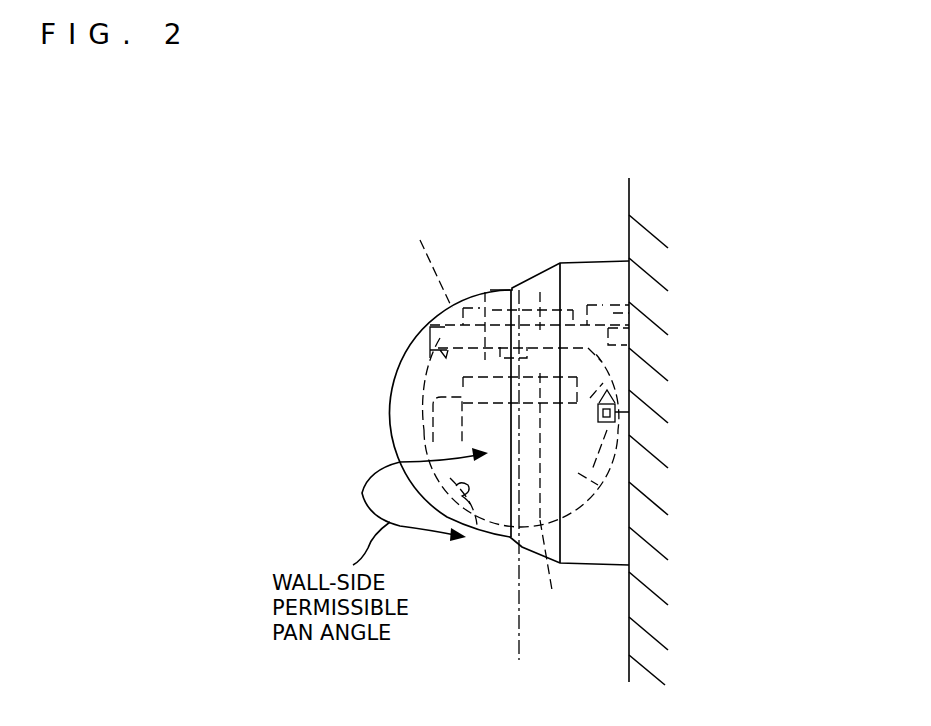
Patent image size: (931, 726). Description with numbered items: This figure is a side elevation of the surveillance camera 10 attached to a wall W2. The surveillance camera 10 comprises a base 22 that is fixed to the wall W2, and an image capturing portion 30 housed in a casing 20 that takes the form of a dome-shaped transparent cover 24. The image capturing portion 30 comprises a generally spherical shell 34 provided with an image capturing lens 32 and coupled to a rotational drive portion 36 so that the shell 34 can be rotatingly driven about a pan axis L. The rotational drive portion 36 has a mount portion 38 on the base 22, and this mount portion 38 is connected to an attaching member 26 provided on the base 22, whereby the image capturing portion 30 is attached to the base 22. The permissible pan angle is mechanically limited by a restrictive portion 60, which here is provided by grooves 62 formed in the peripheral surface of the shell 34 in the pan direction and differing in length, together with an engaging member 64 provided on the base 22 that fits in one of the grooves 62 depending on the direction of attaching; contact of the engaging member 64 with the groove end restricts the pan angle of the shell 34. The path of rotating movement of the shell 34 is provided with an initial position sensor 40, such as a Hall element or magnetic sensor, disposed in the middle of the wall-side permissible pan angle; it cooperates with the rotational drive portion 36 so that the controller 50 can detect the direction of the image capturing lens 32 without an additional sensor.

The surveillance camera 10 is at (374, 251).
The casing 20 is at (573, 140).
The base 22 is at (593, 272).
The dome-shaped transparent cover 24 is at (489, 290).
The attaching member 26 is at (643, 322).
The image capturing portion 30 is at (405, 430).
The image capturing lens 32 is at (477, 525).
The shell 34 is at (603, 490).
The rotational drive portion 36 is at (426, 258).
The mount portion 38 is at (425, 343).
The initial position sensor 40 is at (408, 368).
The controller 50 is at (558, 572).
The restrictive portion 60 is at (748, 383).
The grooves 62 is at (633, 381).
The engaging member 64 is at (640, 427).
The wall W2 is at (650, 251).
The pan axis L is at (517, 633).